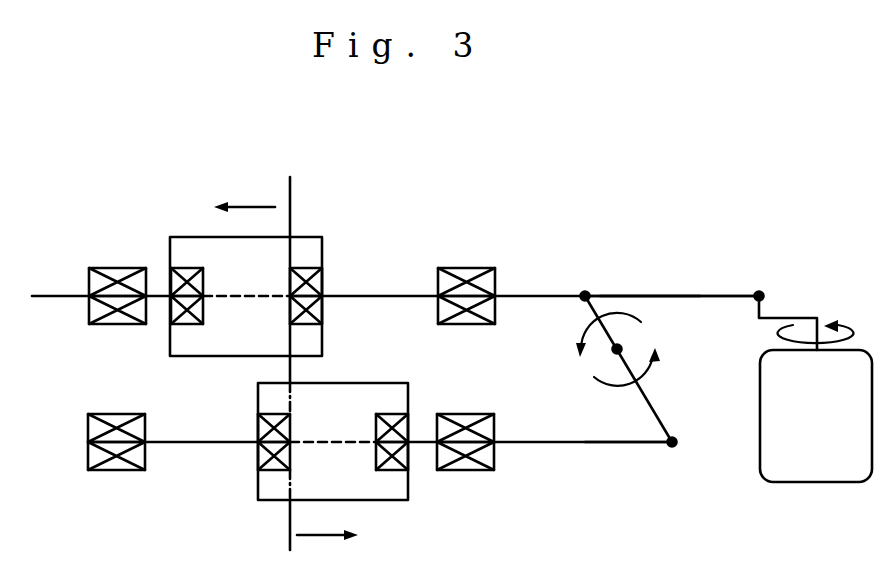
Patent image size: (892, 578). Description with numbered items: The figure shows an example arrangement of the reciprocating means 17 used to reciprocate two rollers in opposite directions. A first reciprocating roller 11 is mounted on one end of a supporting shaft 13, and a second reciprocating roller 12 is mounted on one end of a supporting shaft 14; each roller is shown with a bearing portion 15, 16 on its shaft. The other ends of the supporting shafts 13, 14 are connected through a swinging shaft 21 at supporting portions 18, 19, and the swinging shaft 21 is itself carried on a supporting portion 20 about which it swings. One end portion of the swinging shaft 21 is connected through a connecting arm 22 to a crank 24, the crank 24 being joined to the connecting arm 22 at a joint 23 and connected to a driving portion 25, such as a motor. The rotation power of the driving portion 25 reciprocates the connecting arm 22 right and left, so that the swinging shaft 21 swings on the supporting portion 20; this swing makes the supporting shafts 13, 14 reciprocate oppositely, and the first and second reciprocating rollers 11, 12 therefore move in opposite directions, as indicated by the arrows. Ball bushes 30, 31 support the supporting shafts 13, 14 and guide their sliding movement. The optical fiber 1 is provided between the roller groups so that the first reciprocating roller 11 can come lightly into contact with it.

The optical fiber 1 is at (292, 192).
The first reciprocating roller 11 is at (190, 237).
The second reciprocating roller 12 is at (268, 500).
The supporting shaft 13 is at (400, 295).
The supporting shaft 14 is at (549, 444).
The bearing portion 15 is at (322, 278).
The bearing portion 16 is at (395, 470).
The reciprocating means 17 is at (621, 286).
The supporting portion 18 is at (585, 292).
The supporting portion 19 is at (672, 447).
The supporting portion 20 is at (613, 351).
The swinging shaft 21 is at (640, 444).
The connecting arm 22 is at (681, 296).
The pivot joint 23 is at (762, 292).
The crank 24 is at (770, 319).
The driving portion 25 is at (803, 482).
The ball bush 30 is at (106, 268).
The ball bush 31 is at (122, 471).